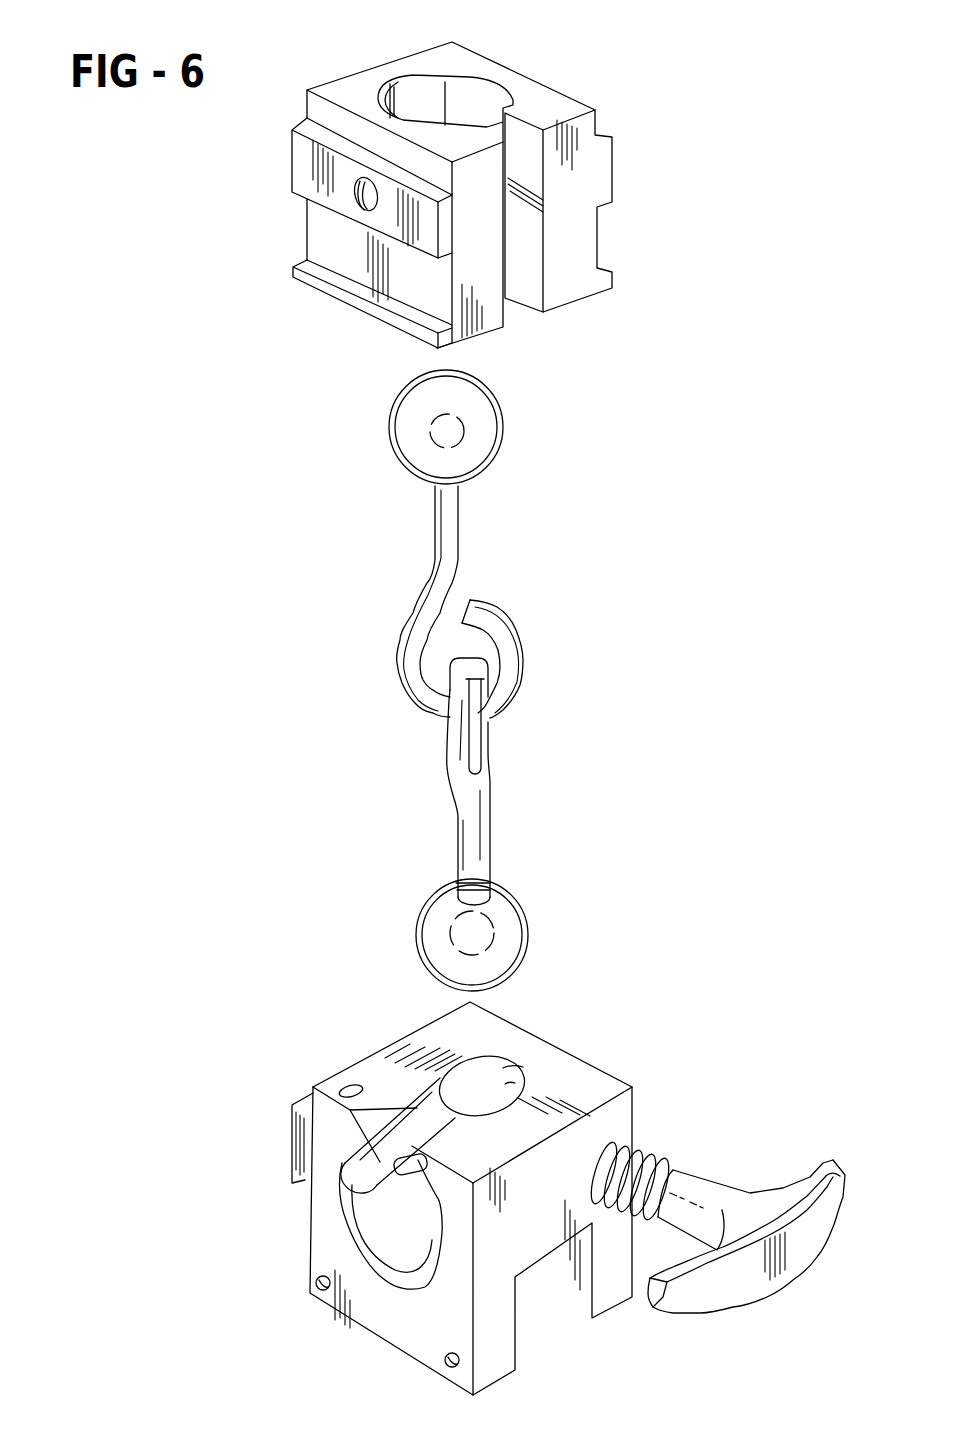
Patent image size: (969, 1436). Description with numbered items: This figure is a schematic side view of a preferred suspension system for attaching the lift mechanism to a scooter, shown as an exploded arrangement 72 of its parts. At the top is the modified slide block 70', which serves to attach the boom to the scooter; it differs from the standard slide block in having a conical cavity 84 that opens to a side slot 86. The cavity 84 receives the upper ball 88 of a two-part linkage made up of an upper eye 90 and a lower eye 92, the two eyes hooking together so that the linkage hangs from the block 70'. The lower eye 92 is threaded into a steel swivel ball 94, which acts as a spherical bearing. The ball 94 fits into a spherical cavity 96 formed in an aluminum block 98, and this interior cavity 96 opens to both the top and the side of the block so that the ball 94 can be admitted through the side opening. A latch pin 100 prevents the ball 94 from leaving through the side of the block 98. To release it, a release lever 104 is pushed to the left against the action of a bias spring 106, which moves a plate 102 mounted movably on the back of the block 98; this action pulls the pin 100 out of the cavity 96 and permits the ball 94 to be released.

The modified slide block 70' is at (443, 187).
The tensioning assembly 72 is at (603, 508).
The conical cavity 84 is at (485, 91).
The side slot 86 is at (531, 234).
The upper ball 88 is at (481, 410).
The upper eye 90 is at (515, 637).
The lower eye 92 is at (447, 735).
The steel swivel ball 94 is at (528, 930).
The spherical cavity 96 is at (458, 1058).
The aluminum block 98 is at (595, 1085).
The latch pin 100 is at (392, 1224).
The plate 102 is at (305, 1182).
The release lever 104 is at (772, 1186).
The bias spring 106 is at (652, 1157).